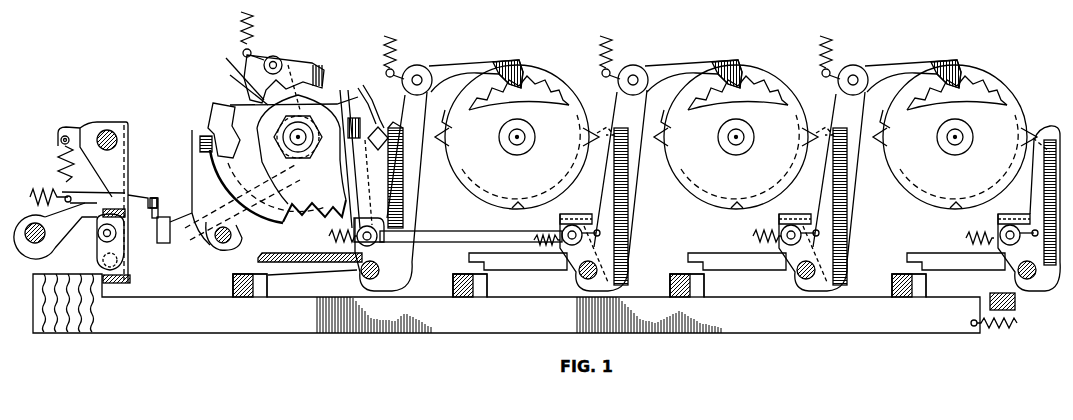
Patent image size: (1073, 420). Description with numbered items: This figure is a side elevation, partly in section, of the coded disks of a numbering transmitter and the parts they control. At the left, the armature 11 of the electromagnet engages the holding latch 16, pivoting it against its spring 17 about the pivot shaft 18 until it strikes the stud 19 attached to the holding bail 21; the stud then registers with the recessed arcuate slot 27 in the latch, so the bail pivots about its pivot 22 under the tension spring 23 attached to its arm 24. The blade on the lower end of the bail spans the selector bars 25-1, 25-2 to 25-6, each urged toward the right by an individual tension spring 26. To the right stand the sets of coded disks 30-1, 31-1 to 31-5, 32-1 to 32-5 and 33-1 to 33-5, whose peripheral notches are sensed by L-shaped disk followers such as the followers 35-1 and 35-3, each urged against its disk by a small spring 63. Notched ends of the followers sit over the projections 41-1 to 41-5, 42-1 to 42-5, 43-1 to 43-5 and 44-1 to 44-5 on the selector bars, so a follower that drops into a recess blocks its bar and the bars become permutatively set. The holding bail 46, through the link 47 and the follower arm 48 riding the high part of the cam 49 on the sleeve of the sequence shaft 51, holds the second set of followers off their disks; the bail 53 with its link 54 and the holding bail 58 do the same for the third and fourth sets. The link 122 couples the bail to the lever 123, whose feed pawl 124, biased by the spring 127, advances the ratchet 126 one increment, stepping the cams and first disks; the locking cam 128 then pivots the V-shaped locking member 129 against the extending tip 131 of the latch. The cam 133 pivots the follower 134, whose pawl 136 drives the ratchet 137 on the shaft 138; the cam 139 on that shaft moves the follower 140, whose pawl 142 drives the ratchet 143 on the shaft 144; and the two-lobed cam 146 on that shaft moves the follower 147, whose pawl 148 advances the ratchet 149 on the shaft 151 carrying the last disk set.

The armature 11 is at (157, 200).
The holding latch 16 is at (80, 215).
The spring 17 is at (38, 189).
The pivot shaft 18 is at (32, 223).
The stud 19 is at (100, 244).
The holding bail 21 is at (122, 150).
The pivot 22 is at (108, 130).
The tension spring 23 is at (62, 164).
The arm 24 is at (78, 127).
The selector bar 25-1 is at (506, 321).
The selector bar 25-2 is at (506, 321).
The selector bar 25-6 is at (38, 335).
The tension spring 26 is at (997, 330).
The recessed arcuate slot 27 is at (128, 200).
The coded disk 30-1 is at (337, 90).
The coded disk 31-1 is at (511, 78).
The coded disk 31-5 is at (577, 94).
The coded disk 32-1 is at (731, 74).
The coded disk 32-5 is at (798, 92).
The coded disk 33-1 is at (955, 79).
The coded disk 33-5 is at (1018, 94).
The L-shaped disk follower 35-1 is at (377, 120).
The L-shaped disk follower 35-3 is at (396, 122).
The projection 41-1 is at (269, 315).
The projection 41-5 is at (234, 285).
The projection 42-1 is at (482, 314).
The projection 42-5 is at (451, 285).
The projection 43-1 is at (697, 315).
The projection 43-5 is at (671, 285).
The projection 44-1 is at (916, 315).
The projection 44-5 is at (893, 285).
The holding bail 46 is at (578, 209).
The link 47 is at (472, 234).
The follower arm 48 is at (402, 200).
The cam 49 is at (215, 110).
The sequence shaft 51 is at (298, 133).
The bail 53 is at (795, 210).
The link 54 is at (768, 236).
The holding bail 58 is at (1015, 210).
The spring 63 is at (329, 237).
The link 122 is at (173, 218).
The lever 123 is at (232, 73).
The feed pawl 124 is at (298, 62).
The ratchet 126 is at (280, 85).
The spring 127 is at (253, 17).
The locking cam 128 is at (210, 126).
The V-shaped locking member 129 is at (197, 238).
The extending tip 131 is at (158, 262).
The cam 133 is at (260, 215).
The follower 134 is at (443, 77).
The pawl 136 is at (462, 62).
The ratchet 137 is at (530, 90).
The shaft 138 is at (520, 137).
The cam 139 is at (600, 138).
The follower 140 is at (628, 218).
The pawl 142 is at (678, 64).
The ratchet 143 is at (748, 83).
The shaft 144 is at (739, 137).
The cam 146 is at (768, 82).
The follower 147 is at (845, 218).
The pawl 148 is at (908, 63).
The ratchet 149 is at (968, 92).
The shaft 151 is at (958, 137).